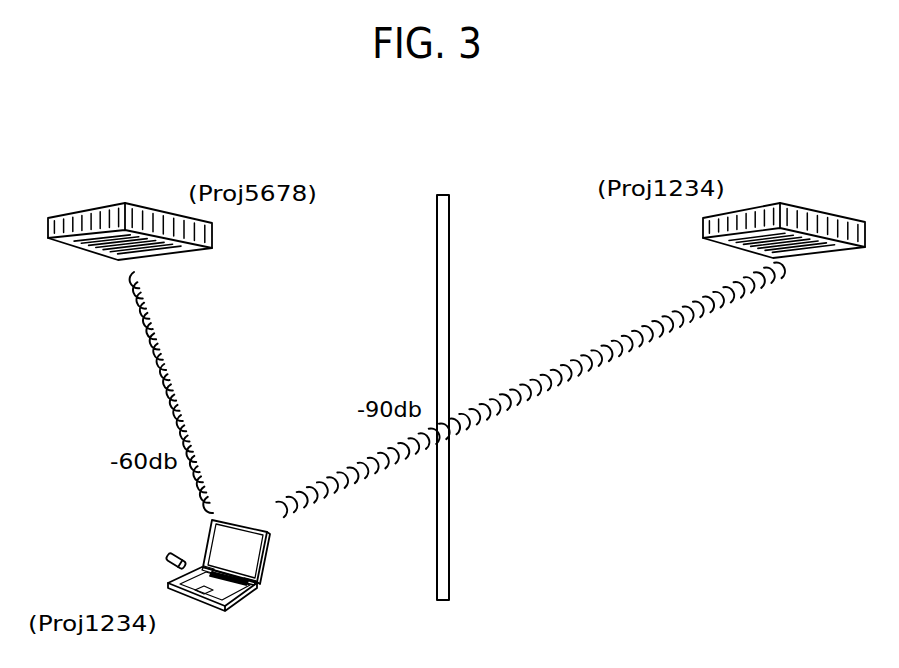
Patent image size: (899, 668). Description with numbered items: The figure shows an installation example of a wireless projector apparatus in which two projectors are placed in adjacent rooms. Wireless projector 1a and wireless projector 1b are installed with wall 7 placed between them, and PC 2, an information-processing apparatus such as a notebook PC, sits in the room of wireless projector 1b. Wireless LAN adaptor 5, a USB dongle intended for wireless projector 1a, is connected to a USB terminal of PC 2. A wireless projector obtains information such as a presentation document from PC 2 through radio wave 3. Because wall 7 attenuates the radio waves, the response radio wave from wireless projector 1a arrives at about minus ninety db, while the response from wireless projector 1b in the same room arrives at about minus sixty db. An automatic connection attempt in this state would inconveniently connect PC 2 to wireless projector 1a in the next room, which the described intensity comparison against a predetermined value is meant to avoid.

The wireless projector 1a is at (793, 212).
The wireless projector 1b is at (138, 212).
The PC 2 is at (250, 566).
The radio wave 3 is at (523, 412).
The wireless LAN adaptor 5 is at (163, 568).
The wall 7 is at (453, 538).